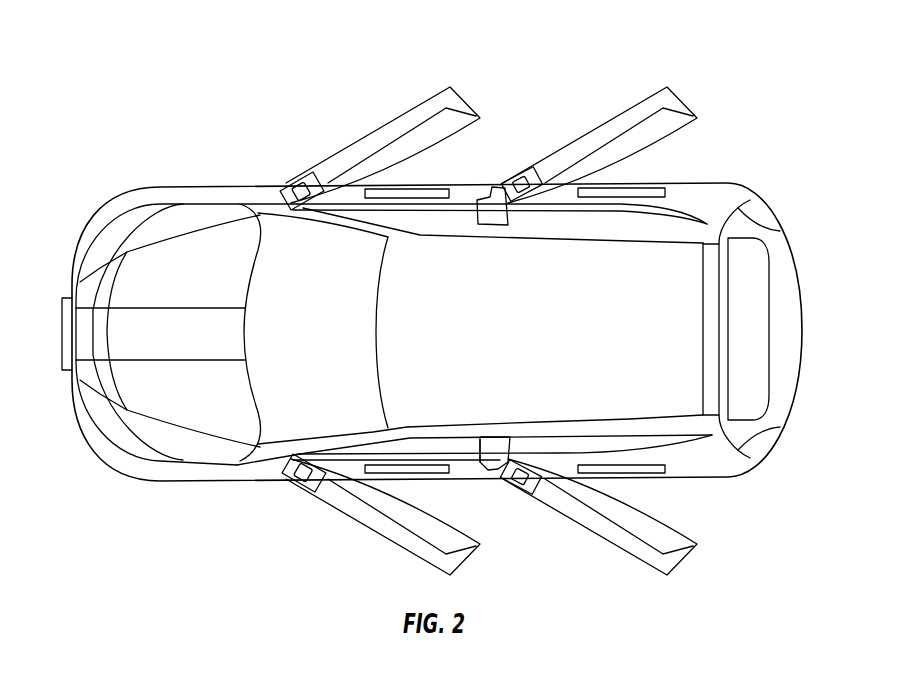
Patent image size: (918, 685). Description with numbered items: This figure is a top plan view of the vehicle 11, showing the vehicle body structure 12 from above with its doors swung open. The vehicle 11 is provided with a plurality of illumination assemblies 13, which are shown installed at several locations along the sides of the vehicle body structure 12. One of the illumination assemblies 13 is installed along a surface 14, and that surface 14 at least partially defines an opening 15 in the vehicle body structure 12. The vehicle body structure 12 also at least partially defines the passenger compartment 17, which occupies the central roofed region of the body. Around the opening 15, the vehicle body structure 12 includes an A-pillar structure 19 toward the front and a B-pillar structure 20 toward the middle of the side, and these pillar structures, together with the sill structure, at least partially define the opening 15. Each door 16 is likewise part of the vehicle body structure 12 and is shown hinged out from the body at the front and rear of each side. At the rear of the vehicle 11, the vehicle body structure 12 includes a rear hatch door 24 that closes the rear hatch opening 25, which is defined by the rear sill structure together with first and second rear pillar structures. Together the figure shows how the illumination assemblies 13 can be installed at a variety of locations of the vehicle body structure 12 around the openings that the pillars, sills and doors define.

The vehicle 11 is at (633, 66).
The vehicle body structure 12 is at (702, 181).
The illumination assemblies 13 is at (407, 195).
The surface 14 is at (470, 470).
The opening 15 is at (479, 443).
The door 16 is at (377, 140).
The passenger compartment 17 is at (279, 242).
The A-pillar structure 19 is at (348, 220).
The B-pillar structure 20 is at (490, 208).
The rear hatch door 24 is at (785, 322).
The rear hatch opening 25 is at (781, 231).